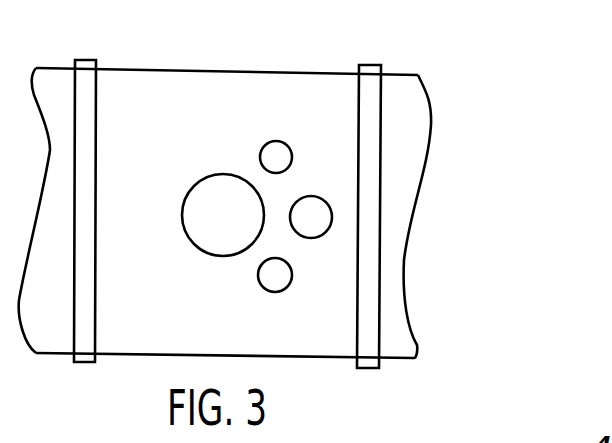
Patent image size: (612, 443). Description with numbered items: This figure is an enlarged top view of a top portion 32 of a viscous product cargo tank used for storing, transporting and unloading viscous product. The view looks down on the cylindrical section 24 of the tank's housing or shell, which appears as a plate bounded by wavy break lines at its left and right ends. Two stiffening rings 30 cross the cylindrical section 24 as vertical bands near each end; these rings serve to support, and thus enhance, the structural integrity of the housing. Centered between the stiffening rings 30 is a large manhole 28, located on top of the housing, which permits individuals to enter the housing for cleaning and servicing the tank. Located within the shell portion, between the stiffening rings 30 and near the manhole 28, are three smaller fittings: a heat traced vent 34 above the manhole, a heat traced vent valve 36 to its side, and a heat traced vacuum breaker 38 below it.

The cylindrical section 24 is at (174, 136).
The manhole 28 is at (234, 228).
The stiffening rings 30 is at (93, 93).
The top portion 32 is at (446, 154).
The heat traced vent 34 is at (271, 141).
The heat traced vent valve 36 is at (332, 216).
The heat traced vacuum breaker 38 is at (285, 290).